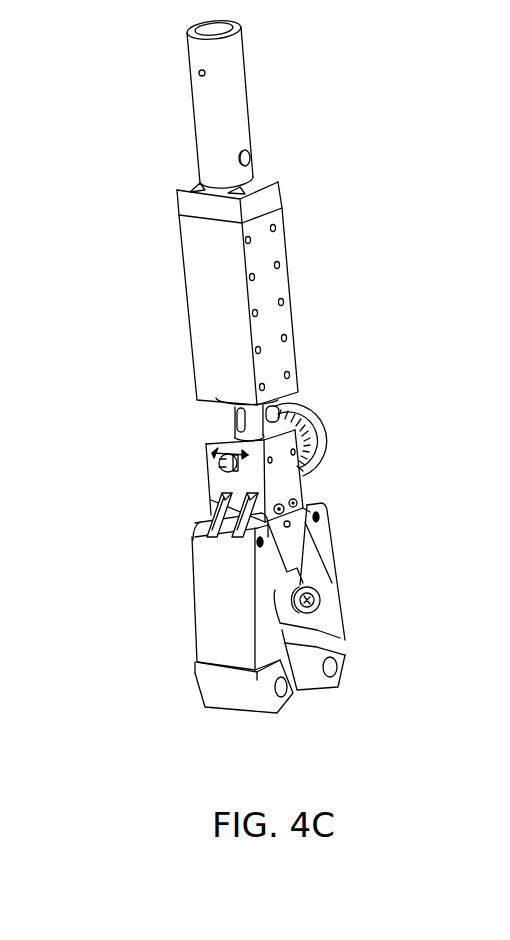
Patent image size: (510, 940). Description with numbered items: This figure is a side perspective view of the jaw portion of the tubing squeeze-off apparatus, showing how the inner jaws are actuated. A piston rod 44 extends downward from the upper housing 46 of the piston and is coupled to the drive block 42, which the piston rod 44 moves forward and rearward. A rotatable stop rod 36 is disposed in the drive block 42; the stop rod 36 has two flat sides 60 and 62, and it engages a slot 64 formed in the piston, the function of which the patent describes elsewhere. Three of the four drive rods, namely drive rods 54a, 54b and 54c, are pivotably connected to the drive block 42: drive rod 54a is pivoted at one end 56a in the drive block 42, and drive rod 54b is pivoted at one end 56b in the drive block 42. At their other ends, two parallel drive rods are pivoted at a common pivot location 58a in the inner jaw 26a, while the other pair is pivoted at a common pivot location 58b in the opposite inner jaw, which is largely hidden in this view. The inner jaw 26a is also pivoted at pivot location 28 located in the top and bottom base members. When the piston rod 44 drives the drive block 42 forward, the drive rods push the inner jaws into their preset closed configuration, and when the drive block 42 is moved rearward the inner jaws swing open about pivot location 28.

The mounting block 46 is at (236, 306).
The piston rod 44 is at (255, 427).
The slot 64 is at (238, 414).
The flat side 62 is at (303, 422).
The flat side 60 is at (212, 453).
The rotatable stop rod 36 is at (222, 465).
The drive block 42 is at (282, 482).
The pivot end 56b is at (297, 500).
The pivot end 56a is at (302, 506).
The drive rod 54c is at (223, 512).
The drive rod 54a is at (250, 515).
The pivot location 58a is at (258, 542).
The pivot location 58b is at (317, 519).
The drive rod 54b is at (288, 527).
The inner jaw 26a is at (248, 630).
The pivot location 28 is at (310, 607).